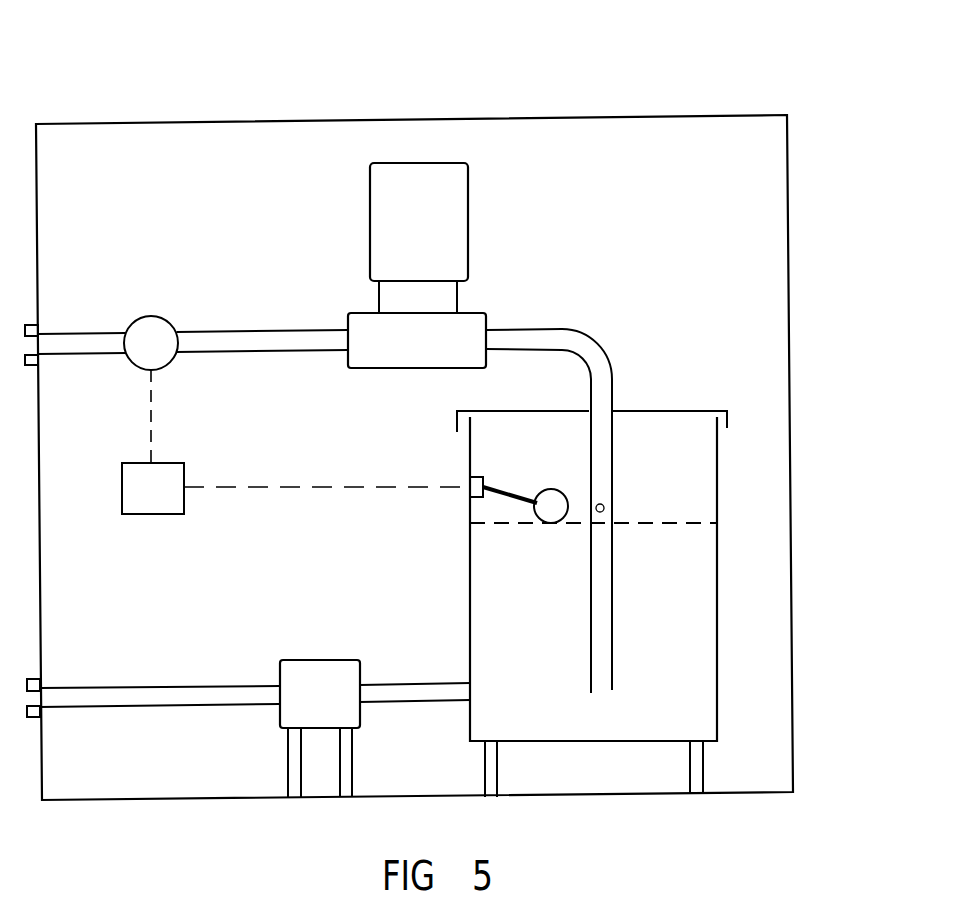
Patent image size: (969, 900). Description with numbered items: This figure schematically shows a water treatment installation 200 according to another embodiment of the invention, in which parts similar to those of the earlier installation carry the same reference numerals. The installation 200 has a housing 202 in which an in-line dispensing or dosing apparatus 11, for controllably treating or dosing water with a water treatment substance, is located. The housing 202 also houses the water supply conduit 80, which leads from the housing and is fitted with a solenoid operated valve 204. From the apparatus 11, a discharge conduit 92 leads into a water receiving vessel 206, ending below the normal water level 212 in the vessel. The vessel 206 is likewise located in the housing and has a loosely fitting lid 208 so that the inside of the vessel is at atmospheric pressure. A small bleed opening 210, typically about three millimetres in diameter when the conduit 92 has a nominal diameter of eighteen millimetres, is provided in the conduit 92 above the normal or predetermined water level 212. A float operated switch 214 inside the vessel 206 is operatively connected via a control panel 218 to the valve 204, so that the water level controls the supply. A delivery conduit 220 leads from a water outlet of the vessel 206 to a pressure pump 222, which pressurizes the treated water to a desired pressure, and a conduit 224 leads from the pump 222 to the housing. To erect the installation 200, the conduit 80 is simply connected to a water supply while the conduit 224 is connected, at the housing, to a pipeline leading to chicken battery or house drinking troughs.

The water treatment installation 200 is at (660, 54).
The housing 202 is at (306, 121).
The solenoid operated valve 204 is at (153, 333).
The water supply conduit 80 is at (267, 343).
The apparatus 11 is at (520, 292).
The discharge conduit 92 is at (597, 360).
The lid 208 is at (640, 409).
The water receiving vessel 206 is at (717, 612).
The bleed opening 210 is at (604, 507).
The normal water level 212 is at (677, 522).
The float operated switch 214 is at (518, 487).
The control panel 218 is at (157, 498).
The delivery conduit 220 is at (415, 695).
The pressure pump 222 is at (318, 677).
The conduit 224 is at (192, 698).